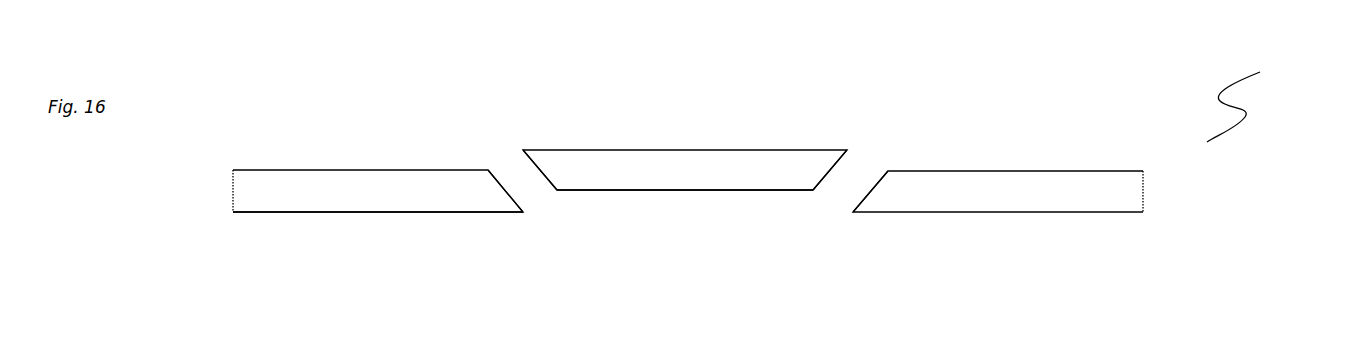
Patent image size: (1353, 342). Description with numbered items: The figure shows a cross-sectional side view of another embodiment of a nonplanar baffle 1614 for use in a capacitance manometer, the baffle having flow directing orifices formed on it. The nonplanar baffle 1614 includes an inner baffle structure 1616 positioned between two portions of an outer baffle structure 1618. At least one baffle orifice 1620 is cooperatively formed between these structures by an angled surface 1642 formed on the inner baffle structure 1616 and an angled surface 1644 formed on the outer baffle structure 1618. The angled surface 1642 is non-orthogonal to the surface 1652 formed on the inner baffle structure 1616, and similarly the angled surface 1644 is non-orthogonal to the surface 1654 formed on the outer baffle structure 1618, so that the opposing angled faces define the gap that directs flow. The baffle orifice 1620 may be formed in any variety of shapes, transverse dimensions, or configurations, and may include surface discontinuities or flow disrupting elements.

The nonplanar baffle 1614 is at (1256, 94).
The inner baffle structure 1616 is at (750, 152).
The outer baffle structure 1618 is at (379, 173).
The baffle orifice 1620 is at (532, 187).
The angled surface 1642 is at (550, 185).
The angled surface 1644 is at (508, 193).
The surface 1652 is at (633, 193).
The surface 1654 is at (335, 215).